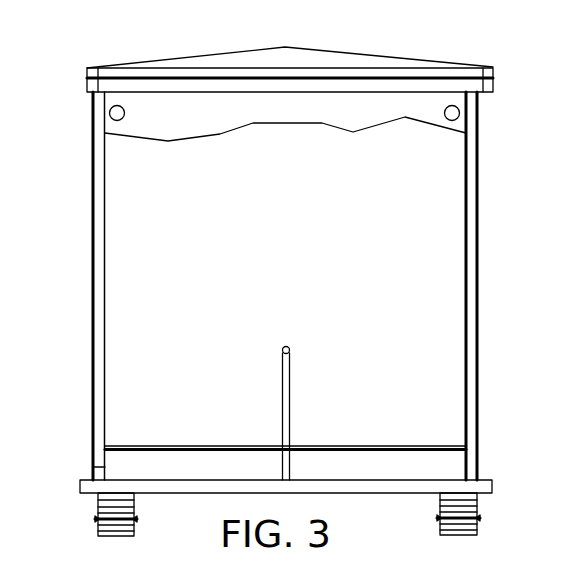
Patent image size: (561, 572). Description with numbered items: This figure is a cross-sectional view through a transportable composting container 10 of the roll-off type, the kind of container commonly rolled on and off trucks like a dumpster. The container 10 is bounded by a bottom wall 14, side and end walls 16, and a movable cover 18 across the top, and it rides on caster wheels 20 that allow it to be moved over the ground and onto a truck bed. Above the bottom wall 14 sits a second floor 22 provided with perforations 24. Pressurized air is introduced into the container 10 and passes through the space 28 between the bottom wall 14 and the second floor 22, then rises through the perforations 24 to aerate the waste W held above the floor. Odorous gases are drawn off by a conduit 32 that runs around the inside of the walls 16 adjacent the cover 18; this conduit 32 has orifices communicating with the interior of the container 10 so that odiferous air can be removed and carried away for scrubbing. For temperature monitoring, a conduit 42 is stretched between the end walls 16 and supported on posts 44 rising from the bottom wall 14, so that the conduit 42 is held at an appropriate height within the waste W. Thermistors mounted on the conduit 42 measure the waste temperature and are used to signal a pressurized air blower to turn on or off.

The transportable composting container 10 is at (482, 120).
The bottom wall 14 is at (448, 477).
The side and end walls 16 is at (92, 273).
The movable cover 18 is at (223, 53).
The caster wheels 20 is at (97, 520).
The second floor 22 is at (280, 445).
The perforations 24 is at (142, 446).
The space 28 is at (392, 462).
The conduit 32 is at (125, 117).
The conduit 42 is at (290, 347).
The posts 44 is at (288, 403).
The waste W is at (222, 134).